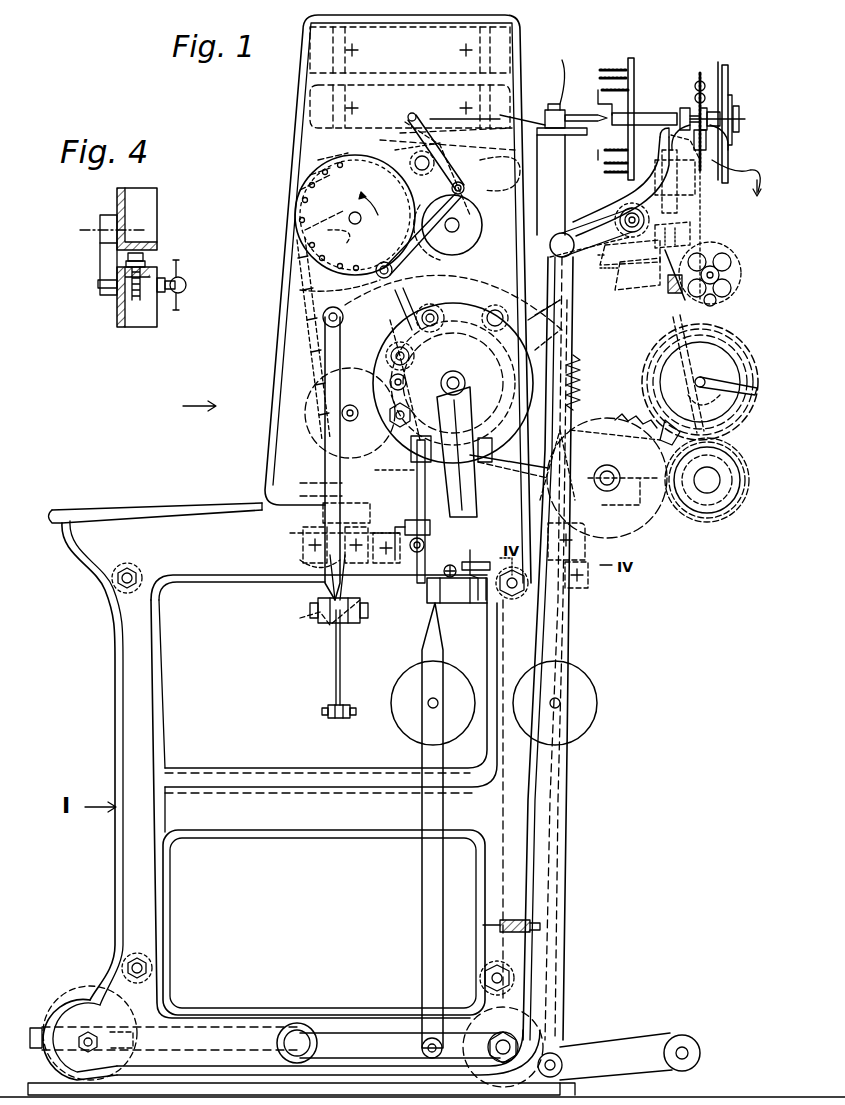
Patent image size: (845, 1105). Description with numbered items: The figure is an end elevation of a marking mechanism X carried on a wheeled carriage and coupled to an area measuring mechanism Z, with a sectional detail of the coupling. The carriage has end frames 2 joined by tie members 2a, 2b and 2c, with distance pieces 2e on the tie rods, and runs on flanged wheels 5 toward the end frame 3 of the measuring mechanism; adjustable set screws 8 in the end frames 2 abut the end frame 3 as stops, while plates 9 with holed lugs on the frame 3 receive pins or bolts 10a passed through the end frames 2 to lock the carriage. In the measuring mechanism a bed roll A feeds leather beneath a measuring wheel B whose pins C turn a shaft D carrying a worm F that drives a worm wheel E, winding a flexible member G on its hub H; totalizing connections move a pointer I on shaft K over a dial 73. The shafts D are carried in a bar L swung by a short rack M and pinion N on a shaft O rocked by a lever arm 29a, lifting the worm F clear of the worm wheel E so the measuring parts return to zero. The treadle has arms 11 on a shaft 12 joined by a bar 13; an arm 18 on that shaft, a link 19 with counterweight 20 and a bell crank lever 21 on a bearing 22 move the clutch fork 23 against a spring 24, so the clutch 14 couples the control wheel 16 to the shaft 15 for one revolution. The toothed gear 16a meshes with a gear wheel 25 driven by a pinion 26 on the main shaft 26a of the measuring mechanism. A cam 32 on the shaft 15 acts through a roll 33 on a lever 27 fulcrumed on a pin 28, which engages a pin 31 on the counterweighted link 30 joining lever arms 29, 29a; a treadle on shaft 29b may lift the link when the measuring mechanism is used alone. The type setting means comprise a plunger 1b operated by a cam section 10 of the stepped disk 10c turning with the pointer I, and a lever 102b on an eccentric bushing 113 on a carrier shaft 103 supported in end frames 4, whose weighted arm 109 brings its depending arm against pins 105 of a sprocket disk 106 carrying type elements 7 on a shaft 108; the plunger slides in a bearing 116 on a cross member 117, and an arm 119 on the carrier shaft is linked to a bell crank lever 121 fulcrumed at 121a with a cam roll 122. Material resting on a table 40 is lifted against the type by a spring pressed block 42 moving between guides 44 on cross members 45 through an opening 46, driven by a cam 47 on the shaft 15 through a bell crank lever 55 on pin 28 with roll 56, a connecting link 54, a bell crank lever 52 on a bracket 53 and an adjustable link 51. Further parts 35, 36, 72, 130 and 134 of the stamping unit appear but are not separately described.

In FIG. 1, the plunger 1b is at (584, 112).
In FIG. 4, the end frame 2 is at (122, 306).
In FIG. 1, the end frame 2 is at (130, 712).
In FIG. 1, the tie member 2a is at (137, 572).
In FIG. 1, the tie member 2b is at (475, 850).
In FIG. 1, the tie member 2c is at (265, 769).
In FIG. 1, the distance piece 2e is at (112, 598).
In FIG. 4, the end frame 3 is at (147, 208).
In FIG. 1, the end frame 3 is at (660, 135).
In FIG. 1, the end frame 4 is at (553, 185).
In FIG. 1, the flanged wheel 5 is at (75, 1002).
In FIG. 1, the type element 7 is at (288, 355).
In FIG. 4, the adjustable set screw 8 is at (144, 258).
In FIG. 1, the adjustable set screw 8 is at (560, 583).
In FIG. 4, the plate 9 is at (106, 257).
In FIG. 1, the plate 9 is at (588, 570).
In FIG. 1, the cam section 10 is at (606, 90).
In FIG. 4, the pin or bolt 10a is at (184, 285).
In FIG. 1, the pin or bolt 10a is at (487, 575).
In FIG. 1, the stepped disk 10c is at (633, 60).
In FIG. 1, the treadle arm 11 is at (232, 1040).
In FIG. 1, the shaft 12 is at (297, 1043).
In FIG. 1, the bar 13 is at (37, 1028).
In FIG. 1, the clutch 14 is at (565, 360).
In FIG. 1, the shaft 15 is at (466, 384).
In FIG. 1, the control wheel 16 is at (498, 267).
In FIG. 1, the toothed gear 16a is at (582, 368).
In FIG. 1, the arm 18 is at (357, 1040).
In FIG. 1, the link 19 is at (422, 935).
In FIG. 1, the counterweight 20 is at (415, 722).
In FIG. 1, the bell crank lever 21 is at (422, 556).
In FIG. 1, the bearing 22 is at (509, 458).
In FIG. 1, the clutch fork 23 is at (402, 509).
In FIG. 1, the spring 24 is at (427, 590).
In FIG. 1, the gear wheel 25 is at (607, 440).
In FIG. 1, the pinion 26 is at (722, 462).
In FIG. 1, the main shaft 26a is at (708, 488).
In FIG. 1, the lever 27 is at (440, 308).
In FIG. 1, the pin 28 is at (419, 300).
In FIG. 1, the lever arm 29 is at (620, 1052).
In FIG. 1, the lever arm 29a is at (596, 228).
In FIG. 1, the shaft 29b is at (692, 1040).
In FIG. 1, the counterweighted link 30 is at (563, 848).
In FIG. 1, the pin 31 is at (566, 310).
In FIG. 1, the cam 32 is at (480, 372).
In FIG. 1, the roll 33 is at (488, 305).
In FIG. 1, the upper compartment 35 is at (462, 50).
In FIG. 1, the pivot 36 is at (408, 100).
In FIG. 1, the table 40 is at (175, 508).
In FIG. 1, the spring pressed bed 42 is at (325, 474).
In FIG. 1, the guide 44 is at (330, 518).
In FIG. 1, the cross member 45 is at (302, 552).
In FIG. 1, the opening 46 is at (325, 462).
In FIG. 1, the cam 47 is at (470, 452).
In FIG. 1, the adjustable link 51 is at (345, 705).
In FIG. 1, the bell crank lever 52 is at (336, 668).
In FIG. 1, the bracket 53 is at (350, 624).
In FIG. 1, the connecting link 54 is at (320, 512).
In FIG. 1, the bell crank lever 55 is at (367, 269).
In FIG. 1, the roll 56 is at (408, 419).
In FIG. 1, the wheel 72 is at (459, 223).
In FIG. 1, the dial 73 is at (722, 64).
In FIG. 1, the lever 102b is at (412, 131).
In FIG. 1, the carrier shaft 103 is at (412, 163).
In FIG. 1, the projecting pin 105 is at (355, 214).
In FIG. 1, the sprocket disk 106 is at (340, 291).
In FIG. 1, the shaft 108 is at (359, 222).
In FIG. 1, the weighted arm 109 is at (462, 152).
In FIG. 1, the eccentric bushing 113 is at (410, 145).
In FIG. 1, the bearing 116 is at (558, 74).
In FIG. 1, the cross member 117 is at (552, 112).
In FIG. 1, the arm 119 is at (500, 174).
In FIG. 1, the bell crank lever 121 is at (347, 329).
In FIG. 1, the fulcrum 121a is at (412, 350).
In FIG. 1, the cam roll 122 is at (410, 378).
In FIG. 1, the disc 130 is at (350, 414).
In FIG. 1, the pivot 134 is at (437, 228).
In FIG. 1, the bed roll A is at (735, 498).
In FIG. 1, the measuring wheel B is at (735, 348).
In FIG. 1, the pin C is at (670, 422).
In FIG. 1, the shaft D is at (672, 322).
In FIG. 1, the worm wheel E is at (732, 258).
In FIG. 1, the worm F is at (664, 284).
In FIG. 1, the flexible member G is at (695, 255).
In FIG. 1, the hub H is at (732, 290).
In FIG. 1, the pointer I is at (729, 90).
In FIG. 1, the shaft K is at (642, 118).
In FIG. 1, the bar L is at (635, 288).
In FIG. 1, the short rack M is at (676, 232).
In FIG. 1, the pinion N is at (639, 214).
In FIG. 1, the shaft O is at (640, 208).
In FIG. 1, the marking mechanism X is at (188, 407).
In FIG. 1, the measuring mechanism Z is at (737, 176).